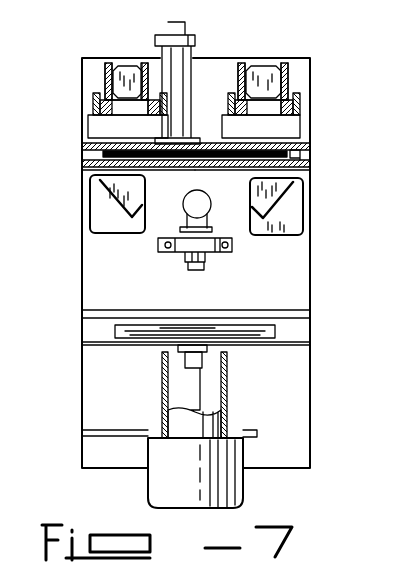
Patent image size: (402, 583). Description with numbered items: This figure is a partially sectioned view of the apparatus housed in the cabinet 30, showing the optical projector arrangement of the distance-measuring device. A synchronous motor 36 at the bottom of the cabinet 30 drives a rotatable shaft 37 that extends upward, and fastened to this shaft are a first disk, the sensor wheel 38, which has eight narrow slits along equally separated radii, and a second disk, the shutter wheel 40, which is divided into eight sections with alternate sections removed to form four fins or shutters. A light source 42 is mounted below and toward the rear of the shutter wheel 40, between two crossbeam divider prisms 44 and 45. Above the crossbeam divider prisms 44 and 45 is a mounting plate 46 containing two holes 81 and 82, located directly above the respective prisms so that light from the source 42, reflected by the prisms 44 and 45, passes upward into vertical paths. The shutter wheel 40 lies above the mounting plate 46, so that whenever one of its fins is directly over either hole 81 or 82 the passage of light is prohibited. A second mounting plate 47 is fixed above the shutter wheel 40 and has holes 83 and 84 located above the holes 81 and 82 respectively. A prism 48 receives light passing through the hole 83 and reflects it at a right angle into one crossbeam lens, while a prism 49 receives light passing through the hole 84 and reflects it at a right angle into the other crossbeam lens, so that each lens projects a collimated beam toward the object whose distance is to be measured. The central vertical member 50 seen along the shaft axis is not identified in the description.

The cabinet 30 is at (302, 264).
The synchronous motor 36 is at (170, 487).
The rotatable shaft 37 is at (196, 394).
The sensor wheel 38 is at (133, 330).
The shutter wheel 40 is at (104, 156).
The light source 42 is at (192, 202).
The crossbeam divider prism 44 is at (102, 208).
The crossbeam divider prism 45 is at (273, 206).
The mounting plate 46 is at (309, 168).
The second mounting plate 47 is at (88, 144).
The prism 48 is at (122, 68).
The prism 49 is at (270, 70).
The center rod 50 is at (177, 83).
The hole 81 is at (135, 166).
The hole 82 is at (258, 167).
The hole 83 is at (141, 146).
The hole 84 is at (250, 144).